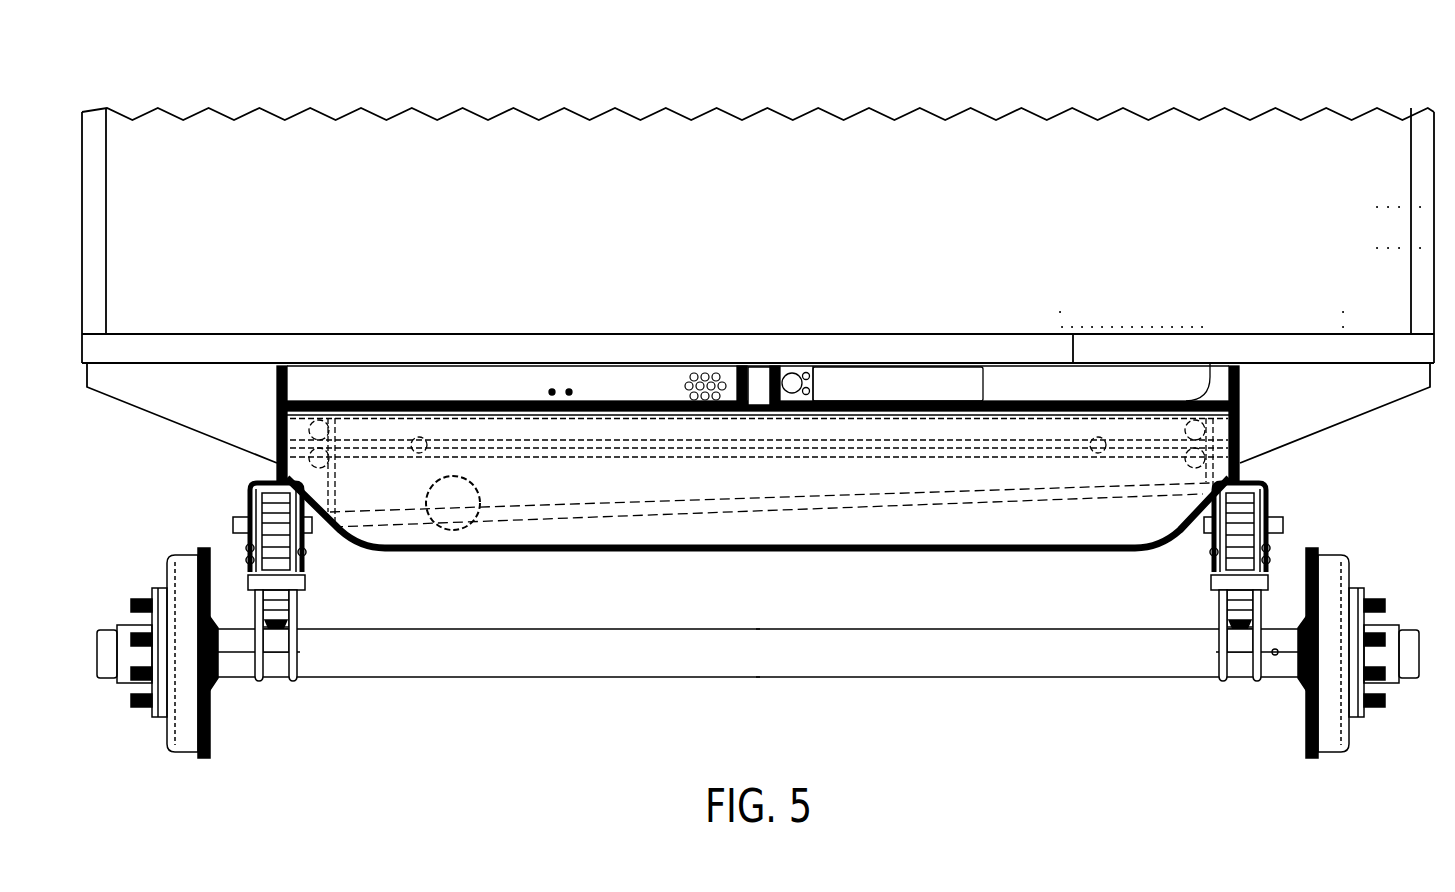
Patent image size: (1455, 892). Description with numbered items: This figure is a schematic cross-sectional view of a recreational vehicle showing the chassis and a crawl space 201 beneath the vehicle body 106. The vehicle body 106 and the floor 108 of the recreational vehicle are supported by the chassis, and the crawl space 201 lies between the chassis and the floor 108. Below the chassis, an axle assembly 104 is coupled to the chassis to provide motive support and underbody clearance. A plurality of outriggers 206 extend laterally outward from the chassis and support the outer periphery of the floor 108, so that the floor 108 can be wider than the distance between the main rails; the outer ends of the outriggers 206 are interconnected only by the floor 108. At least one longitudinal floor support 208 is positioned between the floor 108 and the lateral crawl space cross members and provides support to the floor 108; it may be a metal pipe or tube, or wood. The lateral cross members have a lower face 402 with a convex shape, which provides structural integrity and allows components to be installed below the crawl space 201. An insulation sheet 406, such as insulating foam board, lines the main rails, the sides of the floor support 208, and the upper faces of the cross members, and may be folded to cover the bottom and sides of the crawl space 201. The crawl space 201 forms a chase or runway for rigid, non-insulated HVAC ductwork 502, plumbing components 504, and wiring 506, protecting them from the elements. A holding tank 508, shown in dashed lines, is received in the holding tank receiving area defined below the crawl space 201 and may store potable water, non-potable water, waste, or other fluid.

The axle assembly 104 is at (150, 578).
The vehicle body 106 is at (1440, 120).
The floor 108 is at (280, 342).
The crawl space 201 is at (440, 394).
The outriggers 206 is at (1334, 413).
The longitudinal floor support 208 is at (758, 368).
The lower face 402 is at (491, 553).
The insulation sheet 406 is at (742, 367).
The ductwork 502 is at (897, 365).
The plumbing components 504 is at (551, 388).
The wiring 506 is at (696, 375).
The holding tank 508 is at (651, 530).